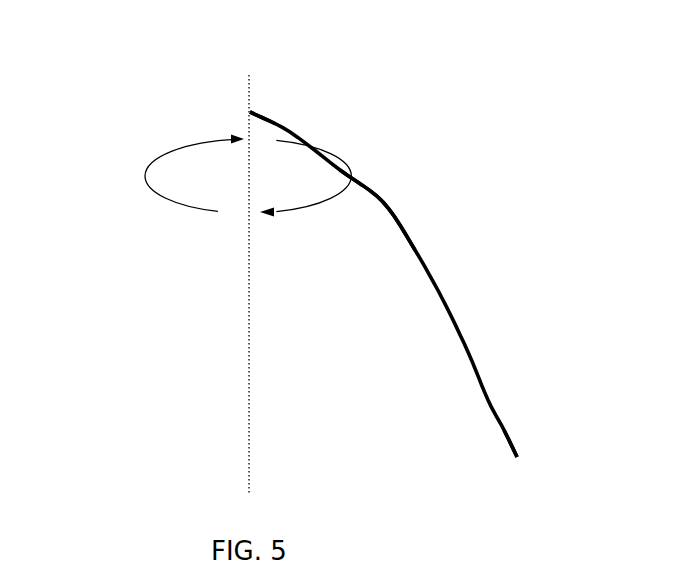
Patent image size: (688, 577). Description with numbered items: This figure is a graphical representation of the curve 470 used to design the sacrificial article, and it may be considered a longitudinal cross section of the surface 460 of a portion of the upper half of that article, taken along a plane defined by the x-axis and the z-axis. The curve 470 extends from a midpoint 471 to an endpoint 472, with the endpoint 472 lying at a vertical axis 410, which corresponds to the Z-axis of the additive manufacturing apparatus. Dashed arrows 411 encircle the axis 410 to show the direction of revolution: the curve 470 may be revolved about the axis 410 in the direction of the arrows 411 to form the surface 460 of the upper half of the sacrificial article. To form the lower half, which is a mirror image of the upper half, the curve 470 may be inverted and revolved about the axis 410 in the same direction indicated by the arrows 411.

The axis 410 is at (248, 92).
The arrows 411 is at (147, 172).
The surface 460 is at (447, 300).
The curve 470 is at (383, 202).
The midpoint 471 is at (517, 457).
The endpoint 472 is at (252, 110).